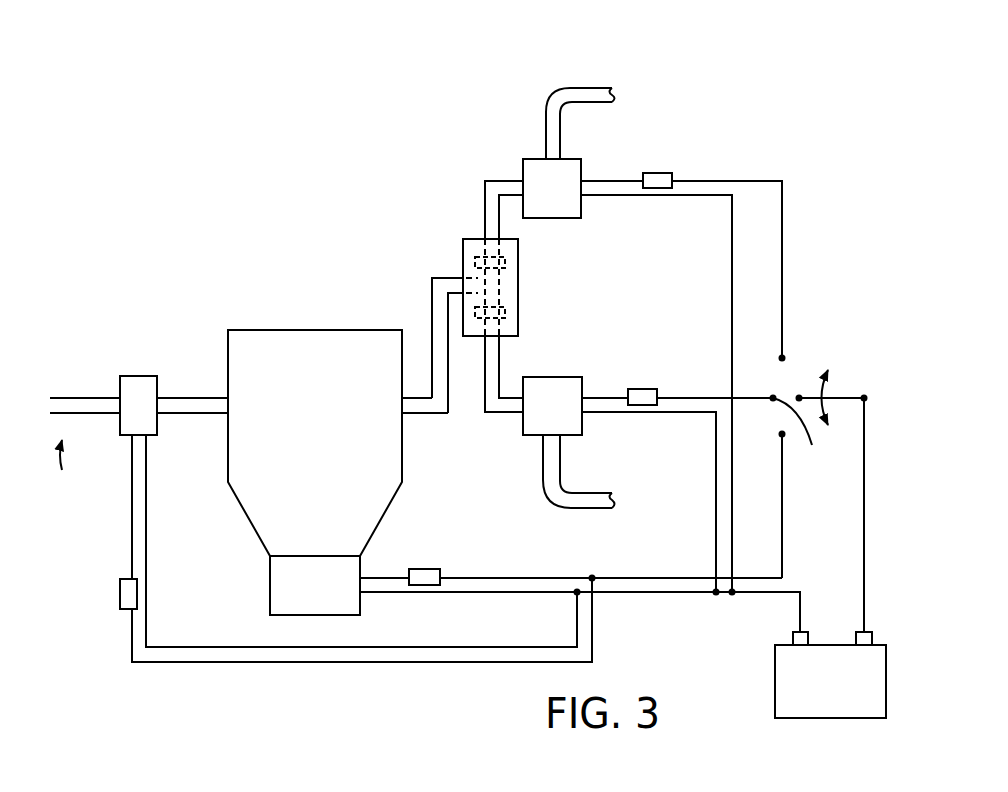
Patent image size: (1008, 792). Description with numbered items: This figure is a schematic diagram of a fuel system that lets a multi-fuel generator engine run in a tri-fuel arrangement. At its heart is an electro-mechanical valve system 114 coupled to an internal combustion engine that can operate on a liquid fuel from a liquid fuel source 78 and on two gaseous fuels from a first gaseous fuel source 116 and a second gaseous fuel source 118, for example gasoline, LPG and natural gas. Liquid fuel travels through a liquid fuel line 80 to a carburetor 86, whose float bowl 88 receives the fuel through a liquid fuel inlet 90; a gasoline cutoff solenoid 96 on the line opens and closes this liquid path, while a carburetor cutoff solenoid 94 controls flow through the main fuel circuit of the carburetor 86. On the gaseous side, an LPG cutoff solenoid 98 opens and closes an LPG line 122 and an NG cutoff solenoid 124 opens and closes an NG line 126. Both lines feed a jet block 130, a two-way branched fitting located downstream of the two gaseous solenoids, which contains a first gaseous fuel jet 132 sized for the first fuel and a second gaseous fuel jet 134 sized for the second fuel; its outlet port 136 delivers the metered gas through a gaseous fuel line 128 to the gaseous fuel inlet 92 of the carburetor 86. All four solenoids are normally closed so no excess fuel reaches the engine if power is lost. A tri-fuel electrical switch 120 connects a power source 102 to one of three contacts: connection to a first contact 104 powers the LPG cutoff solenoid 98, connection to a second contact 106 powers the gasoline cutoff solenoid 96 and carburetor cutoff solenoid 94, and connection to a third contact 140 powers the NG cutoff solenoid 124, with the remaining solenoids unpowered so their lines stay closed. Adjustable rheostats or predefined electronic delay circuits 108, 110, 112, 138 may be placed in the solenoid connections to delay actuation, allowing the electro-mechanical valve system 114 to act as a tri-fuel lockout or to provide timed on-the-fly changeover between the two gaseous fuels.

The liquid fuel source 78 is at (61, 480).
The liquid fuel line 80 is at (193, 398).
The carburetor 86 is at (314, 265).
The float bowl 88 is at (250, 527).
The liquid fuel inlet 90 is at (228, 413).
The gaseous fuel inlet 92 is at (407, 415).
The carburetor cutoff solenoid 94 is at (268, 582).
The gasoline cutoff solenoid 96 is at (132, 376).
The LPG cutoff solenoid 98 is at (556, 218).
The power source 102 is at (775, 680).
The first contact 104 is at (782, 358).
The second contact 106 is at (782, 434).
The delay circuit 108 is at (425, 569).
The delay circuit 110 is at (120, 594).
The delay circuit 112 is at (660, 173).
The electro-mechanical valve system 114 is at (418, 102).
The first gaseous fuel source 116 is at (598, 75).
The second gaseous fuel source 118 is at (600, 512).
The tri-fuel electrical switch 120 is at (838, 348).
The LPG line 122 is at (552, 95).
The NG cutoff solenoid 124 is at (535, 435).
The NG line 126 is at (500, 365).
The gaseous fuel line 128 is at (448, 405).
The jet block 130 is at (462, 255).
The first gaseous fuel jet 132 is at (518, 262).
The second gaseous fuel jet 134 is at (518, 310).
The outlet port 136 is at (455, 268).
The delay circuit 138 is at (646, 389).
The third contact 140 is at (814, 424).